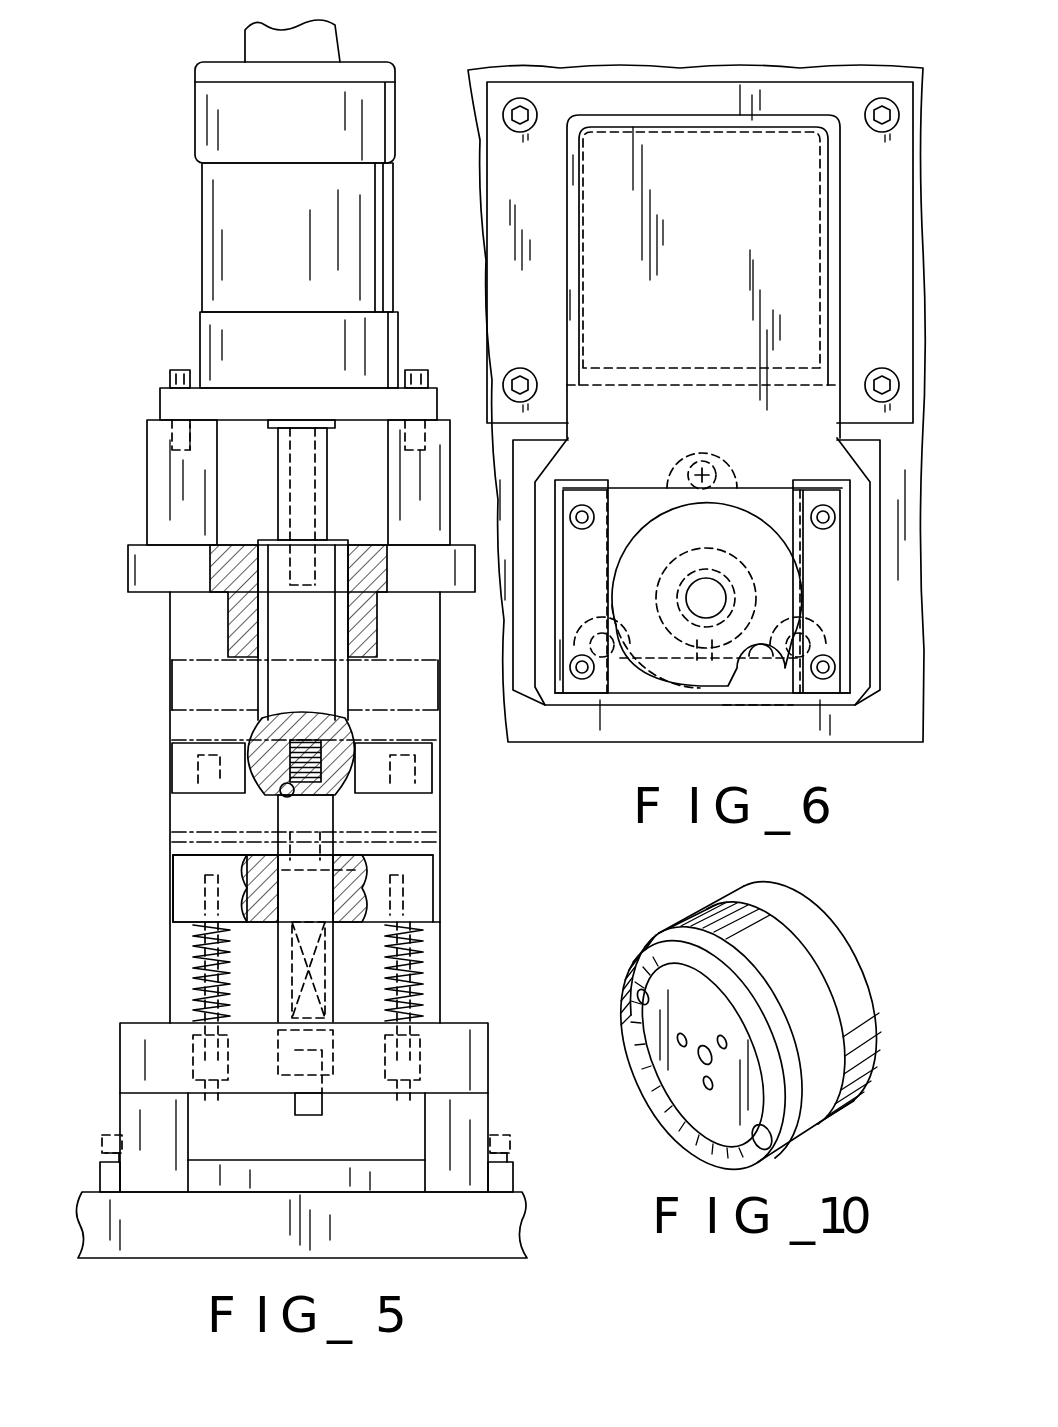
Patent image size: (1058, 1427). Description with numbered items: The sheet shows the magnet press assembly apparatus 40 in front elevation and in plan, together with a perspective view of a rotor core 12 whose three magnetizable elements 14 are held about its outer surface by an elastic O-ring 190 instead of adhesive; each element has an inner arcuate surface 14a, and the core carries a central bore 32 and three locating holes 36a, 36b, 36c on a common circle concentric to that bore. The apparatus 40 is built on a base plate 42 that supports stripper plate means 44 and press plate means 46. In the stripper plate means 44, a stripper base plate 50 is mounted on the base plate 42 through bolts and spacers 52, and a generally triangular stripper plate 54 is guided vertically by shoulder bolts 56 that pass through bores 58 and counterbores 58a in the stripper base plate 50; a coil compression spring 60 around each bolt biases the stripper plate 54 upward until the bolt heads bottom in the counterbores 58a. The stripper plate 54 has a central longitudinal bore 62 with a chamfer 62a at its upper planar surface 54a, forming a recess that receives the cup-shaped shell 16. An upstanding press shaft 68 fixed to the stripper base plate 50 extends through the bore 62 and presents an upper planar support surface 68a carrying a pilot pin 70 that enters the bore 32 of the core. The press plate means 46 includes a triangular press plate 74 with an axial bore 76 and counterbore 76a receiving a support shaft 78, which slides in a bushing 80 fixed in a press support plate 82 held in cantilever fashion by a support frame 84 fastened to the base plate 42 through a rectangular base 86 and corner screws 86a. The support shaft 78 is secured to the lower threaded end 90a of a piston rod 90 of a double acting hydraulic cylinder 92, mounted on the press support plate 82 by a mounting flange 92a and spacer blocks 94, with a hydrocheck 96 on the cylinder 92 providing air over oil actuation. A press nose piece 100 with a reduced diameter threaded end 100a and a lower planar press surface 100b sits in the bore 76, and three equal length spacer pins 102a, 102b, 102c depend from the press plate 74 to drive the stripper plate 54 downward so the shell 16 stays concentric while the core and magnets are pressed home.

In FIG. 10, the rotor core 12 is at (682, 1072).
In FIG. 10, the magnetizable elements 14 is at (745, 895).
In FIG. 10, the inner arcuate surfaces 14a is at (645, 995).
In FIG. 5, the cup-shaped shell 16 is at (285, 842).
In FIG. 10, the bore 32 is at (700, 1056).
In FIG. 10, the locating hole 36a is at (720, 1040).
In FIG. 10, the locating hole 36b is at (705, 1088).
In FIG. 10, the locating hole 36c is at (678, 1040).
In FIG. 5, the assembly apparatus 40 is at (124, 185).
In FIG. 5, the base plate 42 is at (520, 1212).
In FIG. 6, the base plate 42 is at (870, 745).
In FIG. 5, the stripper plate means 44 is at (454, 928).
In FIG. 5, the press plate means 46 is at (449, 706).
In FIG. 5, the stripper base plate 50 is at (480, 1043).
In FIG. 6, the stripper base plate 50 is at (880, 728).
In FIG. 5, the bolts and spacers 52 is at (125, 1105).
In FIG. 5, the stripper plate 54 is at (435, 905).
In FIG. 6, the stripper plate 54 is at (760, 650).
In FIG. 5, the upper planar surface 54a is at (430, 830).
In FIG. 5, the shoulder bolts 56 is at (472, 980).
In FIG. 5, the bores 58 is at (165, 1033).
In FIG. 5, the counterbores 58a is at (306, 1126).
In FIG. 5, the coil compression spring 60 is at (454, 960).
In FIG. 5, the central longitudinal bore 62 is at (200, 912).
In FIG. 5, the chamfer 62a is at (362, 870).
In FIG. 5, the press shaft 68 is at (365, 885).
In FIG. 5, the upper planar support surface 68a is at (250, 865).
In FIG. 5, the pilot pin 70 is at (440, 840).
In FIG. 5, the press plate 74 is at (175, 715).
In FIG. 6, the press plate 74 is at (750, 665).
In FIG. 5, the axial bore 76 is at (280, 793).
In FIG. 5, the axial counterbore 76a is at (262, 735).
In FIG. 5, the support shaft 78 is at (265, 688).
In FIG. 6, the support shaft 78 is at (655, 650).
In FIG. 5, the bushing 80 is at (230, 635).
In FIG. 5, the press support plate 82 is at (150, 565).
In FIG. 6, the press support plate 82 is at (833, 412).
In FIG. 5, the support frame 84 is at (440, 625).
In FIG. 6, the support frame 84 is at (678, 115).
In FIG. 5, the rectangular base 86 is at (512, 1170).
In FIG. 6, the rectangular base 86 is at (590, 100).
In FIG. 5, the screws 86a is at (105, 1150).
In FIG. 6, the screws 86a is at (520, 98).
In FIG. 5, the piston rod 90 is at (278, 470).
In FIG. 6, the piston rod 90 is at (687, 612).
In FIG. 5, the lower threaded end 90a is at (325, 555).
In FIG. 5, the hydraulic cylinder 92 is at (215, 205).
In FIG. 6, the hydraulic cylinder 92 is at (628, 555).
In FIG. 5, the mounting flange 92a is at (160, 410).
In FIG. 6, the mounting flange 92a is at (822, 575).
In FIG. 5, the spacer blocks 94 is at (150, 445).
In FIG. 6, the spacer blocks 94 is at (845, 525).
In FIG. 5, the hydrocheck 96 is at (236, 39).
In FIG. 5, the press nose piece 100 is at (333, 808).
In FIG. 5, the reduced diameter threaded end 100a is at (318, 745).
In FIG. 5, the lower planar press surface 100b is at (280, 832).
In FIG. 5, the spacer pin 102a is at (172, 796).
In FIG. 6, the spacer pin 102a is at (605, 662).
In FIG. 6, the spacer pin 102b is at (720, 470).
In FIG. 5, the spacer pin 102c is at (400, 808).
In FIG. 6, the spacer pin 102c is at (800, 700).
In FIG. 10, the elastic O-ring 190 is at (820, 1025).